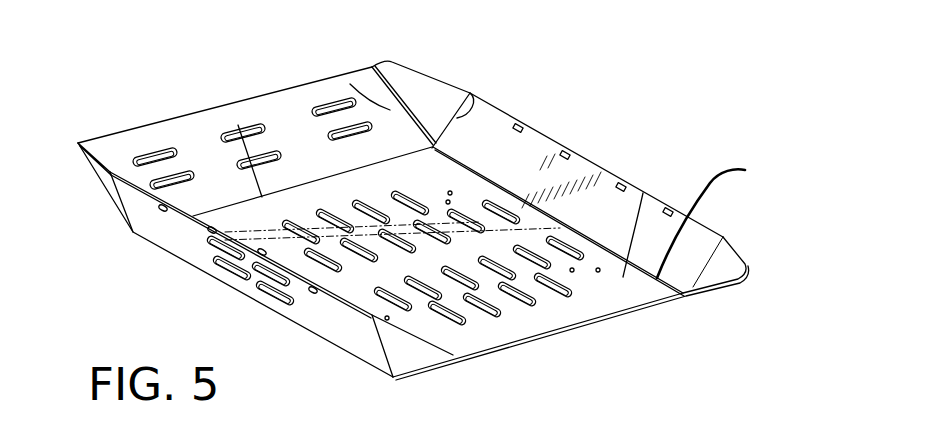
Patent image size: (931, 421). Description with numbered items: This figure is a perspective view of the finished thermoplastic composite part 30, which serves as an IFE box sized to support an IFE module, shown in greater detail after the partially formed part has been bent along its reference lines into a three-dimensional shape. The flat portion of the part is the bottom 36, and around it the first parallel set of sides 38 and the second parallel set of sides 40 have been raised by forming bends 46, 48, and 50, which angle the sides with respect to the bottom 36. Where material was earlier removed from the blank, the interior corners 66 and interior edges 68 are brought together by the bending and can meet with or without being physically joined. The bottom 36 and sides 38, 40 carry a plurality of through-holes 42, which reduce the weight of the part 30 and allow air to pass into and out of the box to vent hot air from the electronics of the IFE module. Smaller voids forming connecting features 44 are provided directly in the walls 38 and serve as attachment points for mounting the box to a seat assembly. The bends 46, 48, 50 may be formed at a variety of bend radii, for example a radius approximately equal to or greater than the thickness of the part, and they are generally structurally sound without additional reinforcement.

The thermoplastic composite part 30 is at (598, 129).
The second parallel set of sides 40 is at (311, 141).
The through-holes 42 is at (280, 302).
The connecting features 44 is at (315, 291).
The bend 48 is at (238, 125).
The bend 50 is at (350, 84).
The interior edges 68 is at (452, 83).
The interior corners 66 is at (456, 118).
The bottom 36 is at (643, 193).
The bend 46 is at (745, 170).
The first parallel set of sides 38 is at (693, 245).